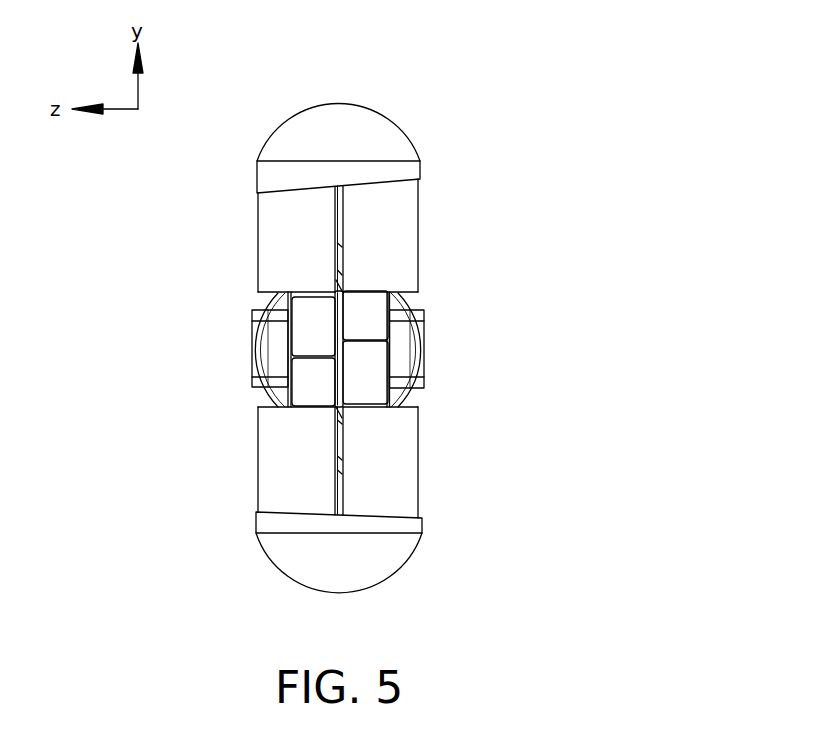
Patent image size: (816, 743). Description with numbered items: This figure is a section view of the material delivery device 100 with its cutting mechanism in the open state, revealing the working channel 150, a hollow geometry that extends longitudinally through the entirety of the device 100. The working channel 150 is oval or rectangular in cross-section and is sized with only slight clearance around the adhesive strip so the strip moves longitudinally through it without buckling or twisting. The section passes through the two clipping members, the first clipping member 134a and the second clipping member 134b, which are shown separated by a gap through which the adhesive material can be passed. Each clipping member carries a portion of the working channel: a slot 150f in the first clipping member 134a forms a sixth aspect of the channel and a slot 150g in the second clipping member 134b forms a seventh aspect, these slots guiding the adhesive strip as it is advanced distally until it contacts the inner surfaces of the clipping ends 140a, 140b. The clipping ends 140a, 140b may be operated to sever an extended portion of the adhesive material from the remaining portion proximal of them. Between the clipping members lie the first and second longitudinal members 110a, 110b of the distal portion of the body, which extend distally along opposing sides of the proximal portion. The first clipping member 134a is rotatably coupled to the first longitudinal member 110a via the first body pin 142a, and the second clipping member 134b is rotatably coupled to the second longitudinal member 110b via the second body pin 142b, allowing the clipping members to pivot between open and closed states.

The material delivery device 100 is at (608, 78).
The clipping end of the second clipping member 140b is at (420, 163).
The second clipping member 134b is at (410, 213).
The slot in the second clipping member 150g is at (340, 245).
The second body pin 142b is at (252, 317).
The first body pin 142a is at (427, 317).
The working channel 150 is at (338, 352).
The second longitudinal member 110b is at (280, 388).
The first longitudinal member 110a is at (403, 392).
The first clipping member 134a is at (288, 452).
The slot in the first clipping member 150f is at (342, 473).
The clipping end of the first clipping member 140a is at (422, 519).